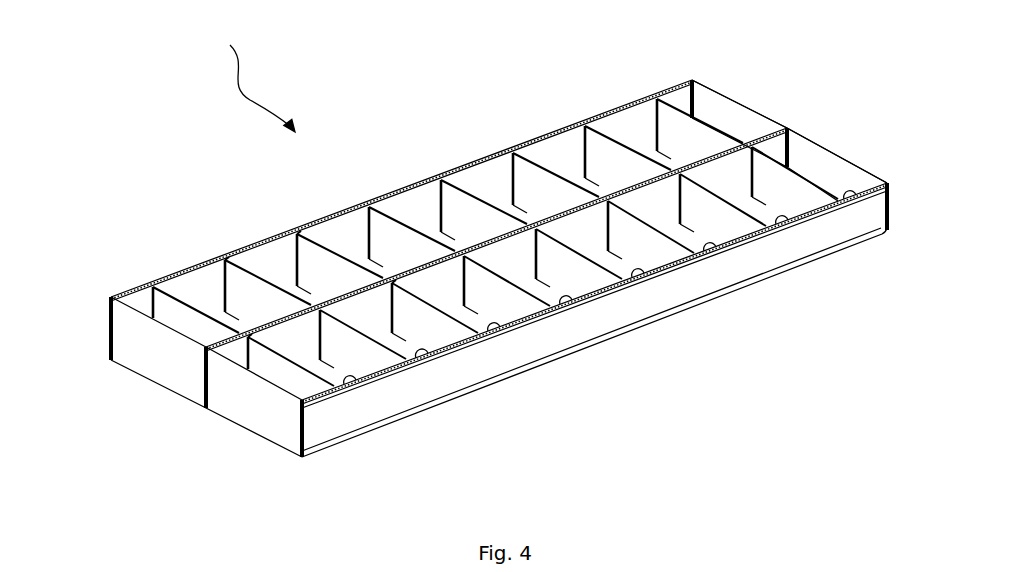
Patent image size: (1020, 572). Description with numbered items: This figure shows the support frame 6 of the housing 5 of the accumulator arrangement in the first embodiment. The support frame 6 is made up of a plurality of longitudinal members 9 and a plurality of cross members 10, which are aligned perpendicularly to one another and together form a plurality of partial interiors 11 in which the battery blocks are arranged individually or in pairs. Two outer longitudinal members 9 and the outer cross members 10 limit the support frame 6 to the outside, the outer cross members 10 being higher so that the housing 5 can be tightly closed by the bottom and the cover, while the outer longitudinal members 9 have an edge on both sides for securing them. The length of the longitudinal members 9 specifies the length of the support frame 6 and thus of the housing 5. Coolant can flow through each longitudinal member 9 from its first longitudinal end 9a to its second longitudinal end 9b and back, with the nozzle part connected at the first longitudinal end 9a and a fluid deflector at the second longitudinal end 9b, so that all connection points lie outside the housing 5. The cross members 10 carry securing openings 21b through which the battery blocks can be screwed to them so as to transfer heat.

The housing 5 is at (262, 88).
The support frame 6 is at (245, 75).
The longitudinal member 9 is at (484, 192).
The first longitudinal end 9a is at (108, 332).
The second longitudinal end 9b is at (690, 90).
The cross member 10 is at (146, 364).
The partial interior 11 is at (140, 298).
The securing opening 21b is at (222, 267).